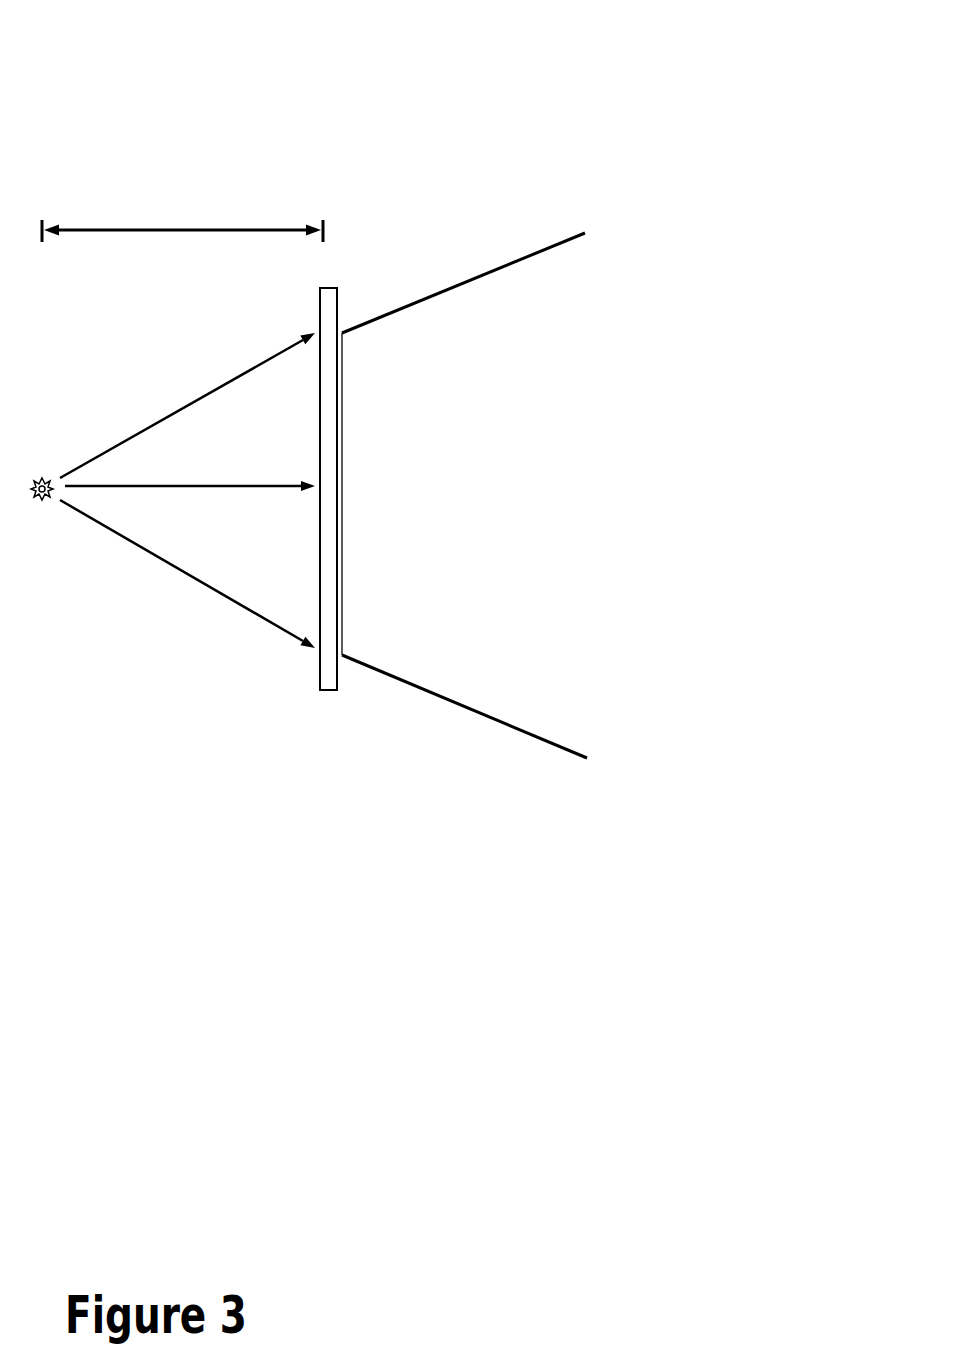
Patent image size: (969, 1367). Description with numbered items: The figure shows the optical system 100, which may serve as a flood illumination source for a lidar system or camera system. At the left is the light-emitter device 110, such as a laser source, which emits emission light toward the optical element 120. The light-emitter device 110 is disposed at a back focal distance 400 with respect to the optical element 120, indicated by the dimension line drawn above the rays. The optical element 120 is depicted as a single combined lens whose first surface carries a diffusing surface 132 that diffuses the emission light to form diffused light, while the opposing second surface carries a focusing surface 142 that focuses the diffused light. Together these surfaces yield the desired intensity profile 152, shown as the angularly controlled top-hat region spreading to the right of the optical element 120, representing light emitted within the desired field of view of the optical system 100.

The optical system 100 is at (806, 79).
The back focal distance 400 is at (182, 208).
The light-emitter device 110 is at (71, 499).
The optical element 120 is at (341, 270).
The diffusing surface 132 is at (273, 469).
The focusing surface 142 is at (390, 464).
The desired intensity profile 152 is at (556, 488).